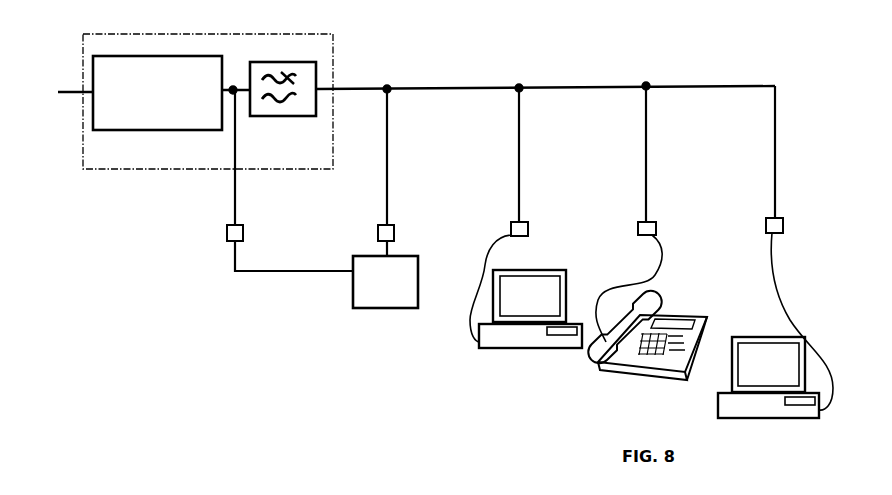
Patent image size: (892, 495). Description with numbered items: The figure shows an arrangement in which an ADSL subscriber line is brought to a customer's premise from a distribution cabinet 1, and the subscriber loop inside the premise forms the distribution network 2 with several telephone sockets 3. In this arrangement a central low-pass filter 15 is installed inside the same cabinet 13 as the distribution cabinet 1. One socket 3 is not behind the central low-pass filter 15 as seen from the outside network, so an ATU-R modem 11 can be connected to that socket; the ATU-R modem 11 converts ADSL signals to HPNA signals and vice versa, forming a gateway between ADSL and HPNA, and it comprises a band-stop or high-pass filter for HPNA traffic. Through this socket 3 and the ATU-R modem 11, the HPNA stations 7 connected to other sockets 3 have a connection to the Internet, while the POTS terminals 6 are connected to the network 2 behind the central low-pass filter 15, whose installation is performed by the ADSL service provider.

The distribution cabinet 1 is at (170, 122).
The distribution network 2 is at (442, 89).
The telephone socket 3 is at (240, 226).
The POTS terminal 6 is at (647, 378).
The HPNA station 7 is at (547, 295).
The ATU-R modem 11 is at (381, 311).
The cabinet 13 is at (334, 66).
The central low-pass filter 15 is at (270, 62).